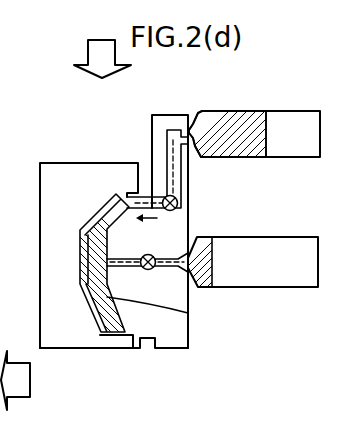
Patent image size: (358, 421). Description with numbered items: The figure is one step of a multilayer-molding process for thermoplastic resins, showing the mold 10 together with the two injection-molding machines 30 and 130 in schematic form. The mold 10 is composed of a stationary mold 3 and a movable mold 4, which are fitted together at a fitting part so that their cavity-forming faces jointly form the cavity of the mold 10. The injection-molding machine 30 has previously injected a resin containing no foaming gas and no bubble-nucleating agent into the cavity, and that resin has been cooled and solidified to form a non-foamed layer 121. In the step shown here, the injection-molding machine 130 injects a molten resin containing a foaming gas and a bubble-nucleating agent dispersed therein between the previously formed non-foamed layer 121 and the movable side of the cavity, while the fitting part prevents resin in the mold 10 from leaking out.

The mold 10 is at (105, 158).
The stationary mold 3 is at (175, 333).
The movable mold 4 is at (73, 330).
The injection-molding machine 130 is at (284, 104).
The injection-molding machine 30 is at (259, 231).
The non-foamed layer 121 is at (188, 313).